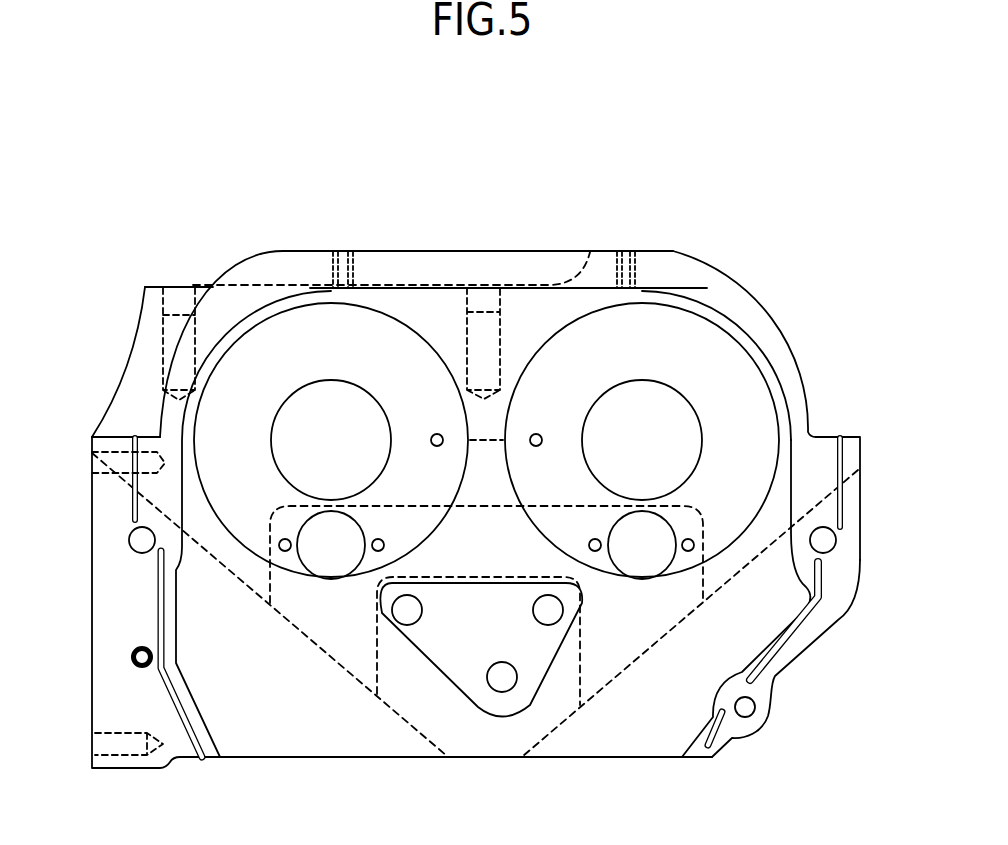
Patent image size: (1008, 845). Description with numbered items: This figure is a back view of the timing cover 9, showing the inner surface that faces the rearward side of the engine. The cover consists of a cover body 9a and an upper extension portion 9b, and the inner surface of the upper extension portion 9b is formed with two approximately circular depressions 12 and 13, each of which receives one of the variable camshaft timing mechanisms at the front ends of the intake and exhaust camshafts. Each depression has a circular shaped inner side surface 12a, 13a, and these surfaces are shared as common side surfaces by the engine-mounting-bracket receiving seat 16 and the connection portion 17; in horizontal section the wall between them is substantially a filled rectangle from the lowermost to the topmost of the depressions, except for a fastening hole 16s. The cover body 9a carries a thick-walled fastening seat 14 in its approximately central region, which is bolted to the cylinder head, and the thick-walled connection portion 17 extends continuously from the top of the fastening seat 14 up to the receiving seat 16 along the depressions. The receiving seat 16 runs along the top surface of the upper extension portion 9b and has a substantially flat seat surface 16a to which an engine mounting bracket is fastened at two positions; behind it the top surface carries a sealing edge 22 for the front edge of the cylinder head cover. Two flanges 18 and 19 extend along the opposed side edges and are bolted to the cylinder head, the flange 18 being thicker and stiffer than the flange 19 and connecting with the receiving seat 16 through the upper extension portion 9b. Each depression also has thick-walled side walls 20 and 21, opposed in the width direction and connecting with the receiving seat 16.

The timing cover 9 is at (795, 340).
The cover body 9a is at (833, 613).
The upper extension portion 9b is at (773, 318).
The depression 12 is at (248, 357).
The circular shaped inner side surface 12a is at (455, 387).
The depression 13 is at (685, 322).
The circular shaped inner side surface 13a is at (510, 416).
The fastening seat 14 is at (452, 673).
The engine-mounting-bracket receiving seat 16 is at (430, 297).
The seat surface 16a is at (378, 287).
The fastening hole 16s is at (485, 307).
The connection portion 17 is at (503, 407).
The flange 18 is at (100, 515).
The flange 19 is at (823, 450).
The side wall 20 is at (187, 418).
The side wall 21 is at (780, 398).
The sealing edge 22 is at (543, 251).